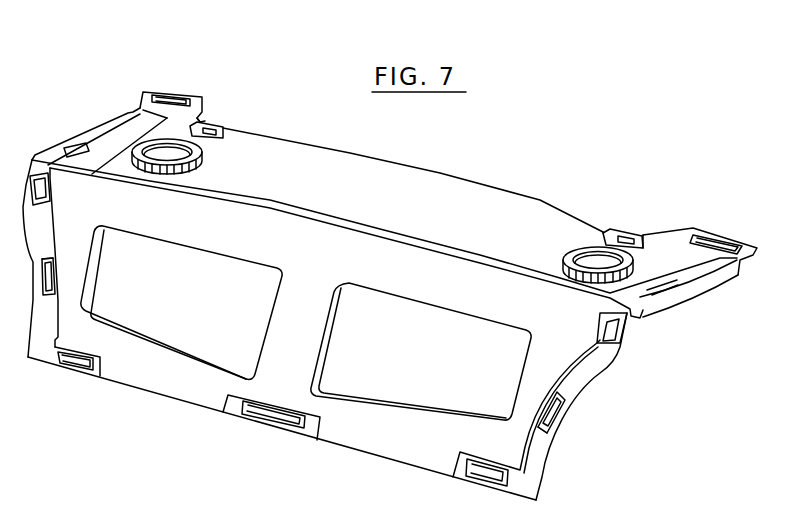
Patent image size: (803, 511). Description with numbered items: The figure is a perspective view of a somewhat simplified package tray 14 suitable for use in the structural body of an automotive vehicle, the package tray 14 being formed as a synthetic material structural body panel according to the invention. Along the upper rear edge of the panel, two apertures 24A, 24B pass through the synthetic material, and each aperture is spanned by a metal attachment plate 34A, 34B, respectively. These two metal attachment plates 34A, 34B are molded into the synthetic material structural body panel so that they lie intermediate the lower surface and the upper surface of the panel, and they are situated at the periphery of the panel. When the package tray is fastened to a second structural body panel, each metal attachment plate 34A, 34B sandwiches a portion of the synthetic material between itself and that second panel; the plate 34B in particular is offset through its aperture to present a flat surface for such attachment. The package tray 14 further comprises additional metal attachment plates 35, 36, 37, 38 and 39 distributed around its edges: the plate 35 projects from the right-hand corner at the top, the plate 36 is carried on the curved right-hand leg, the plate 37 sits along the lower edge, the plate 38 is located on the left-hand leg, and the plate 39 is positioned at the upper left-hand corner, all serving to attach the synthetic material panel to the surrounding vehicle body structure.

The package tray 14 is at (500, 192).
The aperture 24A is at (212, 116).
The aperture 24B is at (627, 225).
The metal attachment plate 34A is at (227, 124).
The metal attachment plate 34B is at (642, 237).
The metal attachment plate 35 is at (737, 243).
The metal attachment plate 36 is at (558, 432).
The metal attachment plate 37 is at (287, 431).
The metal attachment plate 38 is at (35, 278).
The metal attachment plate 39 is at (100, 135).